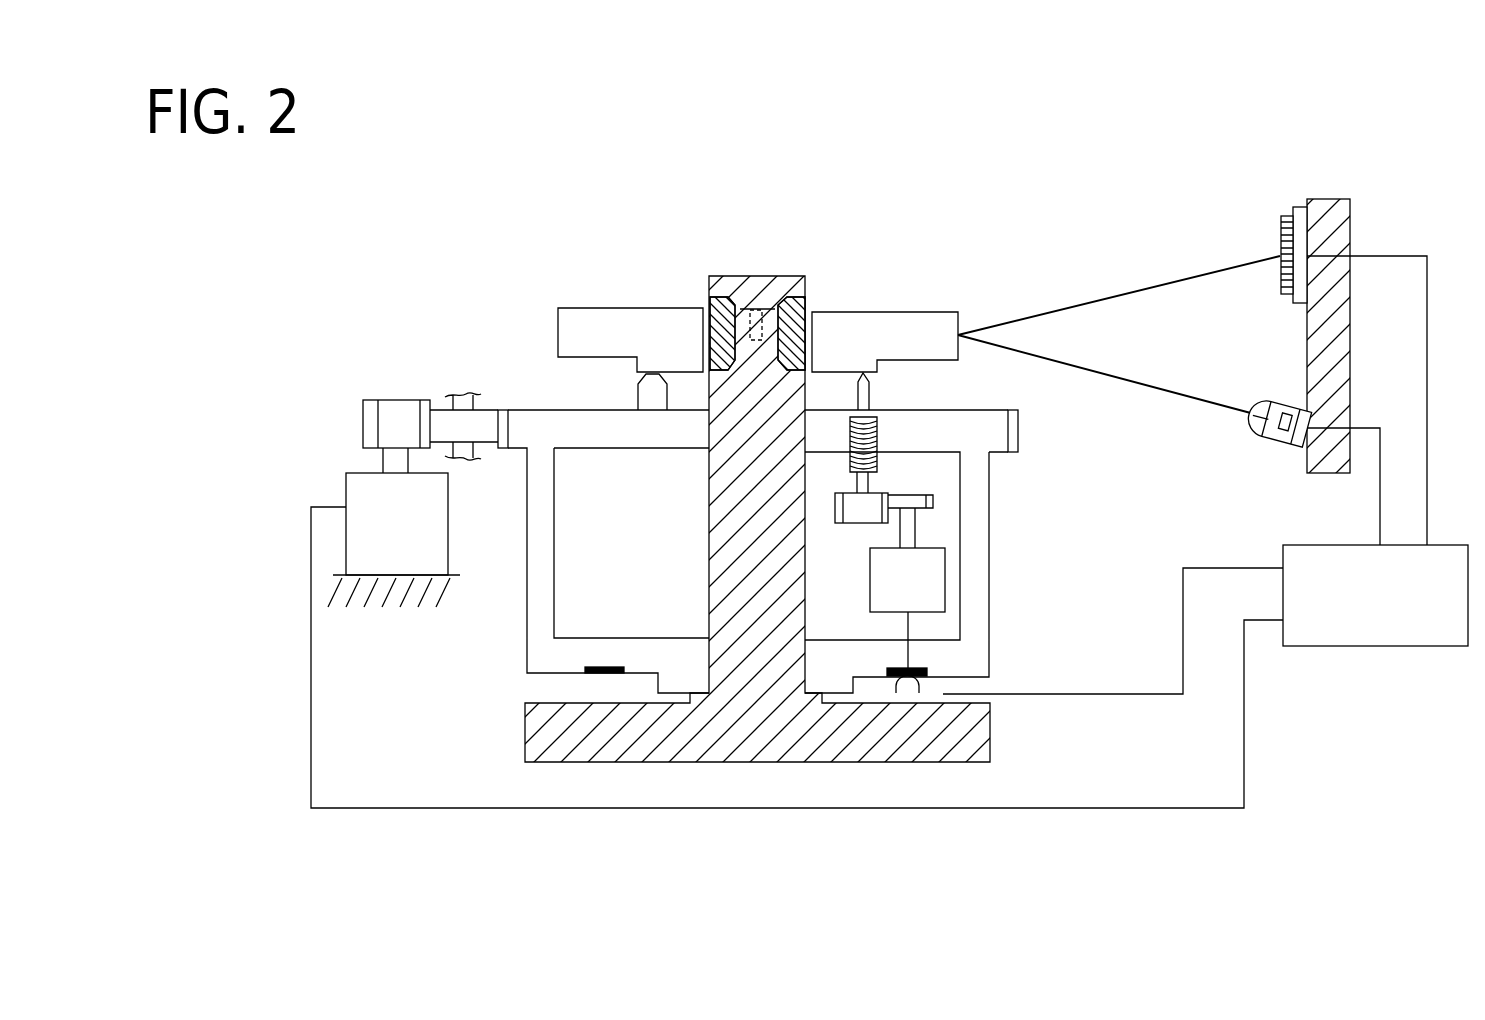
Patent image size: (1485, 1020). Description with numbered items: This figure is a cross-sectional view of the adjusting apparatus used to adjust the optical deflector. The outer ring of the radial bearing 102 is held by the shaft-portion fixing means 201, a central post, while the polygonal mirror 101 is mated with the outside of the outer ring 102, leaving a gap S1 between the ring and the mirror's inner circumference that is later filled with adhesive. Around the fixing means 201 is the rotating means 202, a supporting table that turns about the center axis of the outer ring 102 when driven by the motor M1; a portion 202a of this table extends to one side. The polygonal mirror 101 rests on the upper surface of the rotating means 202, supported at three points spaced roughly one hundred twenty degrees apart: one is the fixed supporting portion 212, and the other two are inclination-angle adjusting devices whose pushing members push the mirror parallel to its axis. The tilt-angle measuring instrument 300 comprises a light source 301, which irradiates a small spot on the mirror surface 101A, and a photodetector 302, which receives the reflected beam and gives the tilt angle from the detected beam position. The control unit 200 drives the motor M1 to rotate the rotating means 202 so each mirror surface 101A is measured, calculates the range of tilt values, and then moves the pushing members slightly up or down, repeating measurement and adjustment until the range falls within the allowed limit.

The shaft-portion fixing means 201 is at (757, 276).
The gap S1 is at (709, 312).
The radial bearing 102 is at (806, 305).
The polygonal mirror 101 is at (938, 312).
The mirror surface 101A is at (960, 330).
The fixed supporting portion 212 is at (638, 394).
The motor M1 is at (346, 483).
The rotating means 202 is at (527, 655).
The frame end portion 202a is at (1018, 430).
The tilt-angle measuring instrument 300 is at (1237, 247).
The light source 301 is at (1263, 440).
The photodetector 302 is at (1282, 216).
The control unit 200 is at (1358, 646).